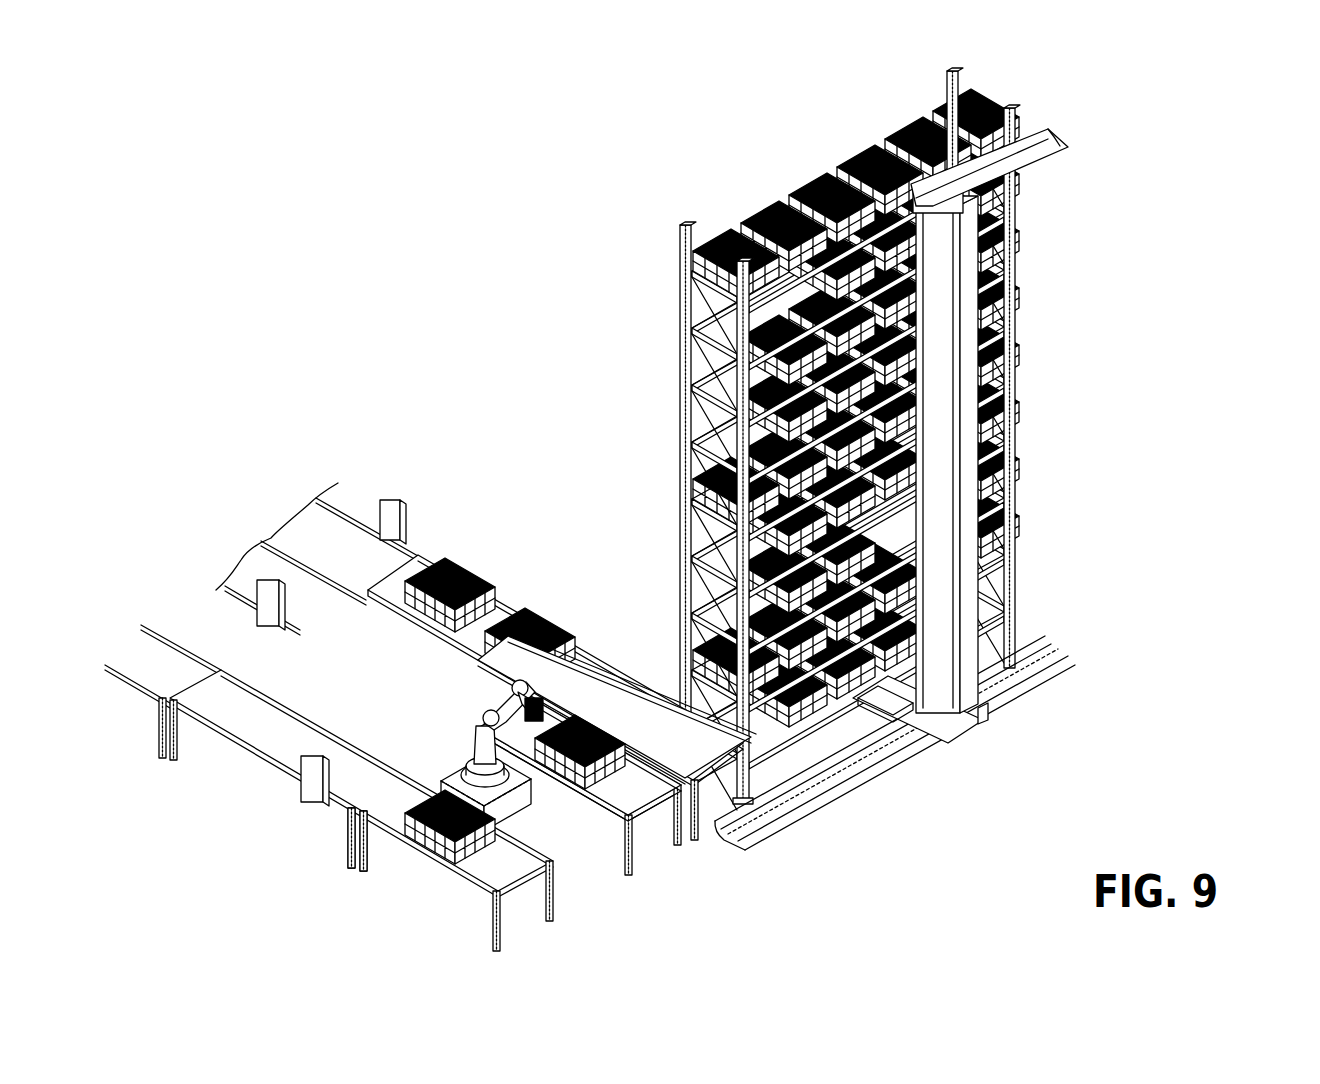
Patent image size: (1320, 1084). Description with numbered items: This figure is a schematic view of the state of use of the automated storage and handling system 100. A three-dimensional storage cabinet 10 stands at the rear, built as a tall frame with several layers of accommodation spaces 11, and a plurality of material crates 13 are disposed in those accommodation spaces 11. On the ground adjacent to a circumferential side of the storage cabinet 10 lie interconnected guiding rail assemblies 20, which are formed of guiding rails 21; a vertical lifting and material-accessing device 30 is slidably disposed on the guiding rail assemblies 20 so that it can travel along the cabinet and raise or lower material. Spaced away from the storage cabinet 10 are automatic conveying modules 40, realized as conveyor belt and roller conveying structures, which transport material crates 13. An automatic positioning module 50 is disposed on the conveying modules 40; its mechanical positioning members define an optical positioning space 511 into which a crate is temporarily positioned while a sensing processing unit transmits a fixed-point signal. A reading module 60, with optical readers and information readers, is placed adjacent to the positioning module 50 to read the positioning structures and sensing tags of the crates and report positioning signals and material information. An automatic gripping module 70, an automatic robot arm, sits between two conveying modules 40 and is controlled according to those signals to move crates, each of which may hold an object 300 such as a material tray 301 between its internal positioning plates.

The automated storage system 100 is at (706, 507).
The three-dimensional storage cabinet 10 is at (826, 436).
The accommodation space 11 is at (693, 291).
The material crate 13 is at (446, 836).
The guiding rail assembly 20 is at (895, 764).
The guiding rail 21 is at (746, 824).
The vertical lifting and material-accessing device 30 is at (1000, 438).
The automatic conveying module 40 is at (589, 640).
The automatic positioning module 50 is at (336, 685).
The reading module 60 is at (388, 474).
The automatic gripping module 70 is at (477, 675).
The object 300 is at (580, 708).
The material tray 301 is at (514, 755).
The optical positioning space 511 is at (340, 832).